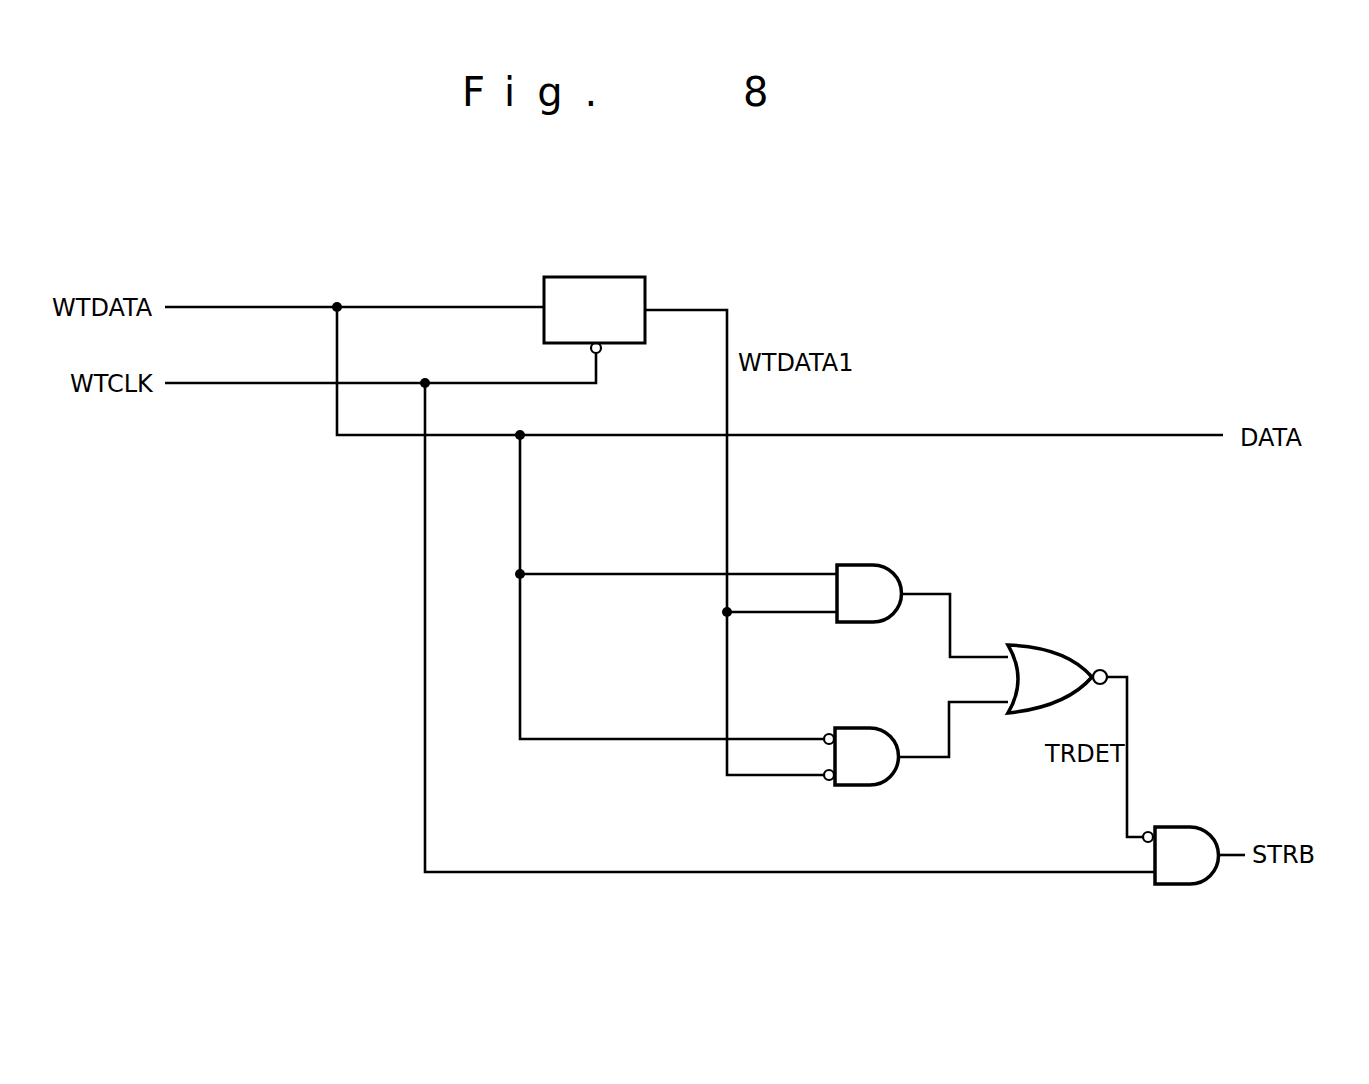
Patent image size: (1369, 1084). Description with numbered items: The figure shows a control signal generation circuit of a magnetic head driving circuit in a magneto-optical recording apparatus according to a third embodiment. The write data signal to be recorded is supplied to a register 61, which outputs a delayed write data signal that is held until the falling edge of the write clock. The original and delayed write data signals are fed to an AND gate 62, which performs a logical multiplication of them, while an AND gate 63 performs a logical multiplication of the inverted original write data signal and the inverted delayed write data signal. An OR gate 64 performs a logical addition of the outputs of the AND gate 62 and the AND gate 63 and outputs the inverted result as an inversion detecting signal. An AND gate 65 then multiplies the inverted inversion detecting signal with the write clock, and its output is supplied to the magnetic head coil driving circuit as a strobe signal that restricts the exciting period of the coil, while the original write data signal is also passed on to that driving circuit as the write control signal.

The register 61 is at (604, 277).
The AND gate 62 is at (863, 565).
The AND gate 63 is at (847, 728).
The OR gate 64 is at (1052, 645).
The AND gate 65 is at (1180, 827).